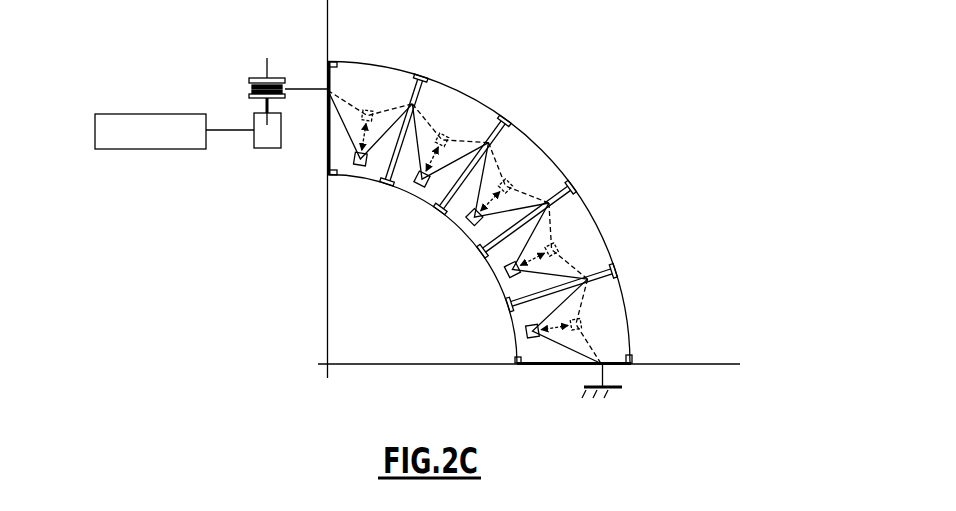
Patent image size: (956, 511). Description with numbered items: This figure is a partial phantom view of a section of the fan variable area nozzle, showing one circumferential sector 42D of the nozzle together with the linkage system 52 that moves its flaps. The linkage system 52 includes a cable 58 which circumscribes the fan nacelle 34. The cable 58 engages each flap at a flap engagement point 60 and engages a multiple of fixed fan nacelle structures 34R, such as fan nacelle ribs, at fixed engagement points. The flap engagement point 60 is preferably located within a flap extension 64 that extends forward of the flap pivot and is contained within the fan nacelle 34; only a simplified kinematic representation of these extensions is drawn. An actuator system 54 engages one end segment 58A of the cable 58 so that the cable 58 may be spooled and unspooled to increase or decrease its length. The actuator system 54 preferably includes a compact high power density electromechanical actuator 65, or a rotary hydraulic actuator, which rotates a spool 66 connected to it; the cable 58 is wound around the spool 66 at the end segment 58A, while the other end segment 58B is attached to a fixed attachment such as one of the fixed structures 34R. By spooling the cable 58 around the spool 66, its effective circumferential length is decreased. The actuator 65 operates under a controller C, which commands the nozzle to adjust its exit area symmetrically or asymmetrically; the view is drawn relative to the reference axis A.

The fan nacelle 34 is at (575, 164).
The fixed fan nacelle structures 34R is at (330, 72).
The circumferential sector 42D is at (715, 148).
The flap extension 64 is at (376, 112).
The cable 58 is at (328, 129).
The end segment 58A is at (306, 88).
The end segment 58B is at (618, 391).
The spool 66 is at (250, 79).
The electromechanical actuator 65 is at (265, 149).
The actuator system 54 is at (239, 157).
The controller C is at (137, 149).
The flap engagement point 60 is at (356, 183).
The linkage system 52 is at (413, 200).
The axis A is at (329, 367).